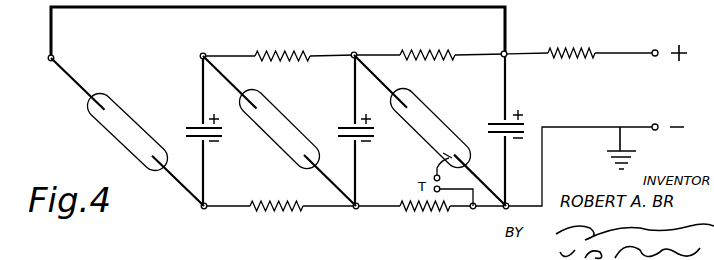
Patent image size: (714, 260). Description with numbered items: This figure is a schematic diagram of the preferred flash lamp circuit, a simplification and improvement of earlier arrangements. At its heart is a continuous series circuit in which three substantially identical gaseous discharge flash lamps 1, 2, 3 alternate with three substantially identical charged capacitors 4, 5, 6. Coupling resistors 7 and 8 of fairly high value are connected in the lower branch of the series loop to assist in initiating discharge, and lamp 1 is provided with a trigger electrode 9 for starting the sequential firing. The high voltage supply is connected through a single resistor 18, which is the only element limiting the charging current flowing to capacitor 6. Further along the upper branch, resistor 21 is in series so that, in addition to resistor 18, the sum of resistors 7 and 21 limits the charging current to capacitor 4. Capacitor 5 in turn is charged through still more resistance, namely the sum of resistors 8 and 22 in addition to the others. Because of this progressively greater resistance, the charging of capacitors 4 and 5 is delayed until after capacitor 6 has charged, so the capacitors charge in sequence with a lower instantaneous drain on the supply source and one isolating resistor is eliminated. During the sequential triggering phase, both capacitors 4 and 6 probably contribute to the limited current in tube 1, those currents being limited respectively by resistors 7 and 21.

The gaseous discharge flash lamp 1 is at (434, 118).
The gaseous discharge flash lamp 2 is at (290, 120).
The gaseous discharge flash lamp 3 is at (130, 114).
The capacitor 4 is at (377, 133).
The capacitor 5 is at (221, 137).
The capacitor 6 is at (531, 128).
The coupling resistor 7 is at (410, 199).
The coupling resistor 8 is at (275, 199).
The trigger electrode 9 is at (441, 157).
The resistor 18 is at (588, 58).
The resistor 21 is at (418, 60).
The resistor 22 is at (275, 61).